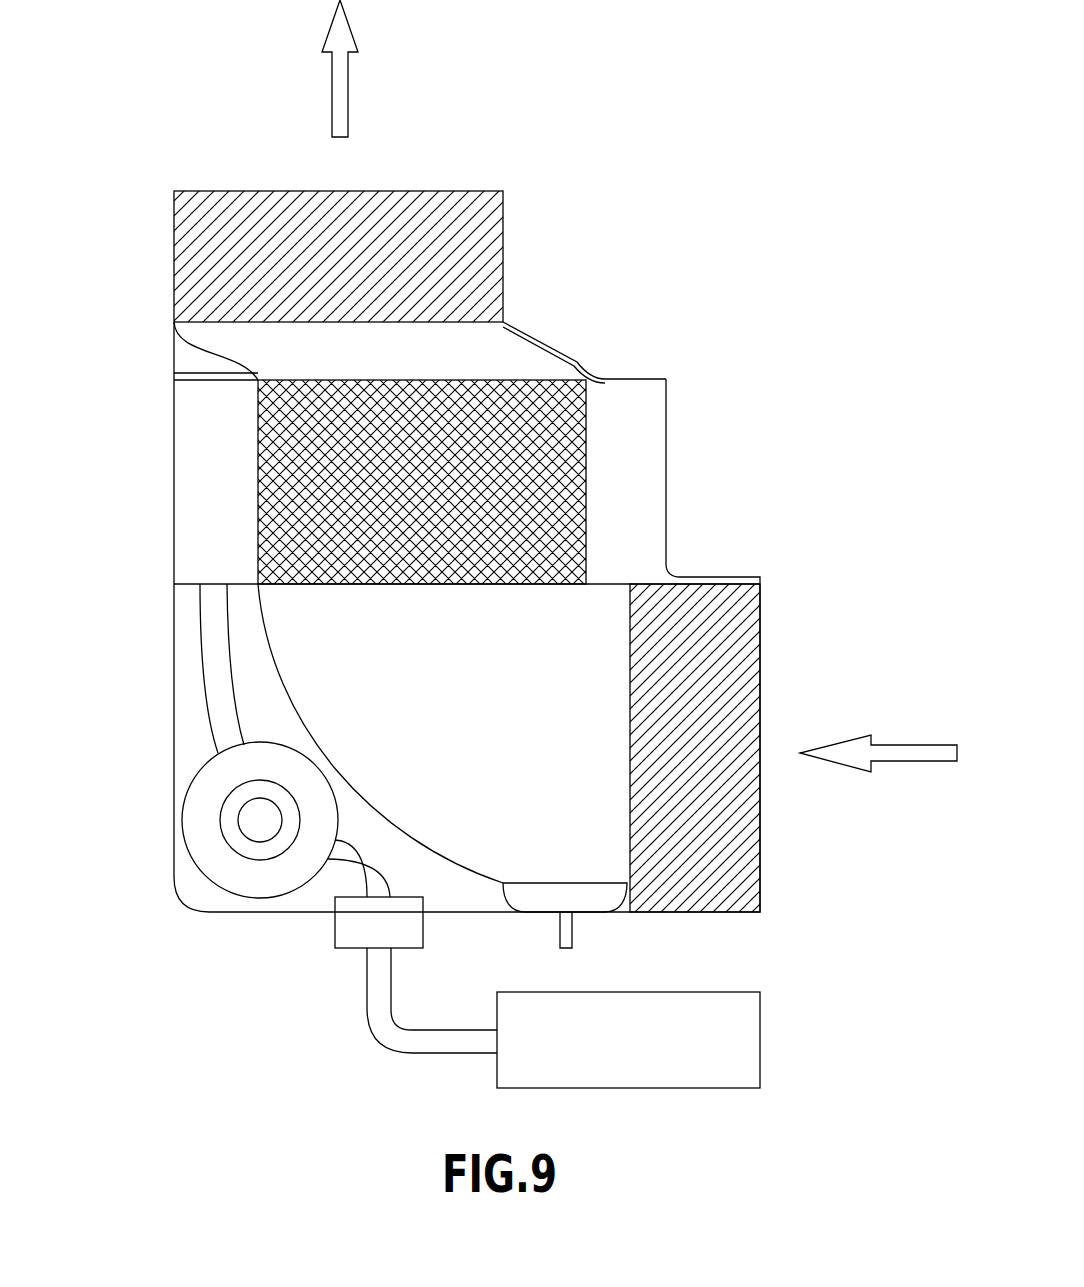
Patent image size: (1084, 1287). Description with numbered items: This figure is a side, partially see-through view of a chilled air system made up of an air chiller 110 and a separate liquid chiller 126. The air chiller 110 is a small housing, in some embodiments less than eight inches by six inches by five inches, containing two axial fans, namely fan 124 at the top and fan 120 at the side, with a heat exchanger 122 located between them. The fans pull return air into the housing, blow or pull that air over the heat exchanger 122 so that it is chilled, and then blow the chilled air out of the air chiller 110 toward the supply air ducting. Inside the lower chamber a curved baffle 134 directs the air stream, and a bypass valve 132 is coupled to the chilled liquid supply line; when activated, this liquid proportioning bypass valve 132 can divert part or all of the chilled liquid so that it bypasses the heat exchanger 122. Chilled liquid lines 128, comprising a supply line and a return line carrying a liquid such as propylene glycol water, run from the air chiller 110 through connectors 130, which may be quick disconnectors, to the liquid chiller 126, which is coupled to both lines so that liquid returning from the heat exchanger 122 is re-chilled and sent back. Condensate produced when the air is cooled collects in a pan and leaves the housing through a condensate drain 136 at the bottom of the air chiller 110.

The air chiller 110 is at (135, 113).
The fan 120 is at (707, 612).
The heat exchanger 122 is at (555, 398).
The fan 124 is at (250, 198).
The liquid chiller 126 is at (628, 1040).
The chilled liquid lines 128 is at (215, 622).
The connectors 130 is at (350, 948).
The bypass valve 132 is at (232, 828).
The baffle 134 is at (283, 688).
The condensate drain 136 is at (566, 950).